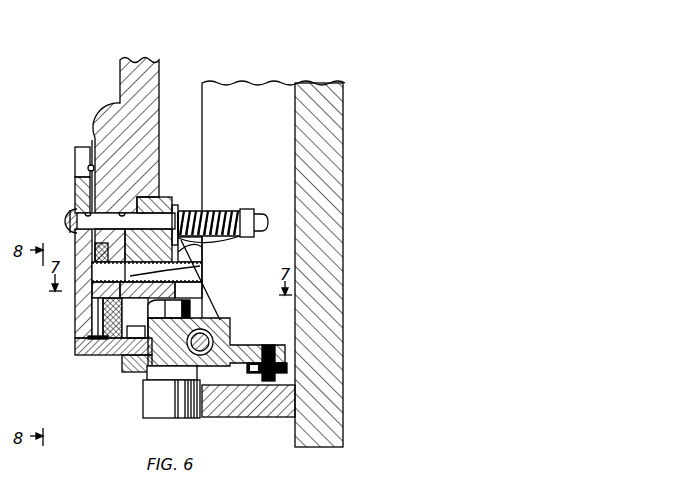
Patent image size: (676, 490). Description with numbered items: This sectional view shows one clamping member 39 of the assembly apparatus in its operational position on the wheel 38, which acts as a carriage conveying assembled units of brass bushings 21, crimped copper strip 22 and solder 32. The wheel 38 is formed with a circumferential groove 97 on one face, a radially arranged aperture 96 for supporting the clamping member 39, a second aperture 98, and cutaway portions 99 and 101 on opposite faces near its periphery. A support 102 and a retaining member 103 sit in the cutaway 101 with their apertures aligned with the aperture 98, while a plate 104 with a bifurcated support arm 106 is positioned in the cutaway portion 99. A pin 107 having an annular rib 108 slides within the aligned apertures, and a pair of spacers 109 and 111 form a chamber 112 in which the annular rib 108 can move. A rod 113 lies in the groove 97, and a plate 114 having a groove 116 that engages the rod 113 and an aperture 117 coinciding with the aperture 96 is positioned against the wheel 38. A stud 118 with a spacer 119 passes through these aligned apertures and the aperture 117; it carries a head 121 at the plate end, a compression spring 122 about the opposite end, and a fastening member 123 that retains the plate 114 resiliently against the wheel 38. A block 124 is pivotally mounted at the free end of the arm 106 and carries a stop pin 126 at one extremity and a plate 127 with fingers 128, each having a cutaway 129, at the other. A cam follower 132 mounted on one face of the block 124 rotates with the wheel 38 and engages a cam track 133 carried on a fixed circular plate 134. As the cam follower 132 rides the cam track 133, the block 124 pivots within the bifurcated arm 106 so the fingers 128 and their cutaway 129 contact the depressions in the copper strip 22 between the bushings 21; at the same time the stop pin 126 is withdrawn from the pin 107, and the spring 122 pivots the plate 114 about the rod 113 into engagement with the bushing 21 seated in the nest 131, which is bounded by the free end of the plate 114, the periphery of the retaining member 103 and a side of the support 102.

The wheel 38 is at (121, 102).
The groove 97 is at (93, 143).
The rod 113 is at (88, 163).
The groove 116 is at (89, 168).
The plate 114 is at (80, 186).
The head 121 is at (70, 212).
The cutaway portion 101 is at (78, 238).
The spacer 109 is at (93, 249).
The retaining member 103 is at (92, 284).
The brass bushing 21 is at (90, 326).
The nest 131 is at (72, 322).
The strip of solder 32 is at (86, 341).
The cutaway 129 is at (84, 345).
The fingers 128 is at (75, 350).
The clamping member 39 is at (60, 360).
The crimped copper strip 22 is at (92, 356).
The support 102 is at (103, 357).
The plate 127 is at (113, 357).
The aperture 98 is at (132, 372).
The cam follower 132 is at (143, 405).
The aperture 117 is at (97, 208).
The aperture 96 is at (130, 213).
The cutaway portion 99 is at (160, 205).
The plate 104 is at (166, 205).
The stud 118 is at (178, 211).
The chamber 112 is at (137, 228).
The compression spring 122 is at (222, 209).
The fastening member 123 is at (258, 211).
The cam track 133 is at (209, 84).
The circular plate 134 is at (300, 92).
The annular rib 108 is at (186, 256).
The pin 107 is at (182, 263).
The bifurcated support arm 106 is at (203, 284).
The spacer 111 is at (196, 302).
The spacer 119 is at (215, 239).
The block 124 is at (225, 323).
The stop pin 126 is at (266, 345).